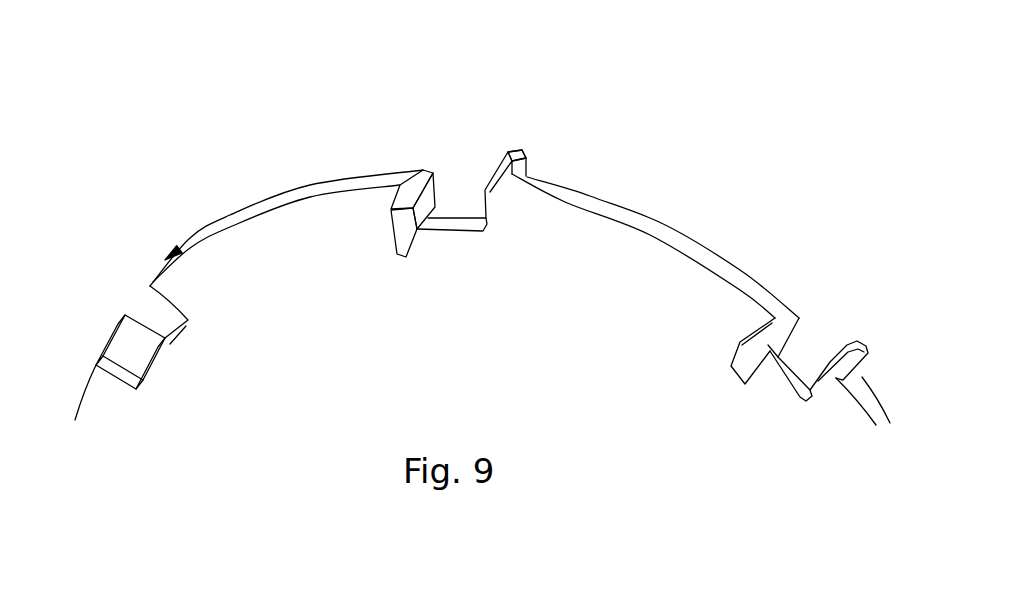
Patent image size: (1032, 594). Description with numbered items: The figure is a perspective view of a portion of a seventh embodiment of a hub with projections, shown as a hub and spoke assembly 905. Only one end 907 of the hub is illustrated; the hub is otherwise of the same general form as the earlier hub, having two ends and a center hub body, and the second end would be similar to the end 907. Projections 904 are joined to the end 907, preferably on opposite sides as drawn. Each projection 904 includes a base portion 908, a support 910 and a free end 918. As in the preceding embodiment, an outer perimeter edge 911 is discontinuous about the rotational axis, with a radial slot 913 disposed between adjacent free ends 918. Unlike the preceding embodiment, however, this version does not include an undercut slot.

The projection 904 is at (395, 142).
The hub and spoke assembly 905 is at (335, 159).
The end of hub 907 is at (699, 218).
The base portion 908 is at (495, 226).
The support 910 is at (498, 160).
The outer perimeter edge 911 is at (748, 274).
The radial slot 913 is at (427, 208).
The free end 918 is at (501, 160).